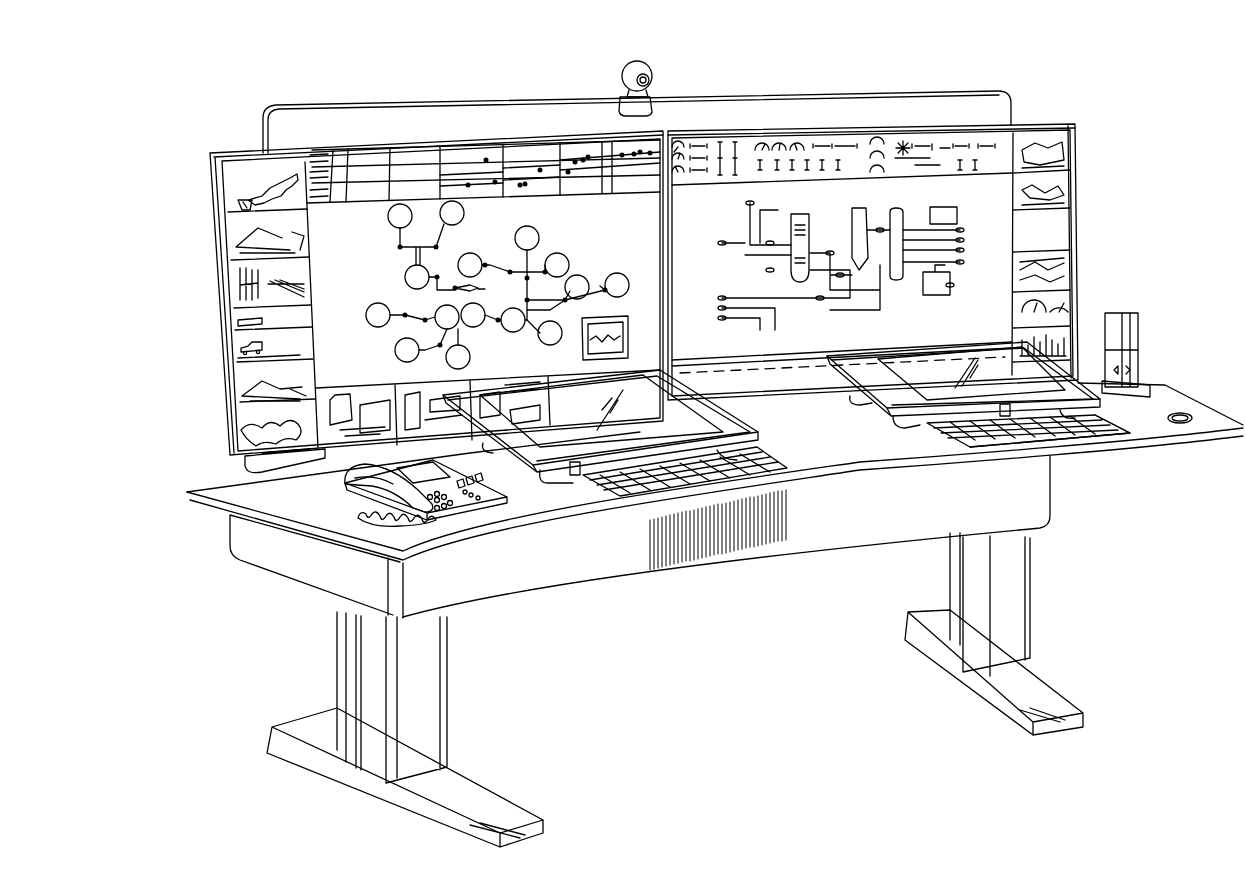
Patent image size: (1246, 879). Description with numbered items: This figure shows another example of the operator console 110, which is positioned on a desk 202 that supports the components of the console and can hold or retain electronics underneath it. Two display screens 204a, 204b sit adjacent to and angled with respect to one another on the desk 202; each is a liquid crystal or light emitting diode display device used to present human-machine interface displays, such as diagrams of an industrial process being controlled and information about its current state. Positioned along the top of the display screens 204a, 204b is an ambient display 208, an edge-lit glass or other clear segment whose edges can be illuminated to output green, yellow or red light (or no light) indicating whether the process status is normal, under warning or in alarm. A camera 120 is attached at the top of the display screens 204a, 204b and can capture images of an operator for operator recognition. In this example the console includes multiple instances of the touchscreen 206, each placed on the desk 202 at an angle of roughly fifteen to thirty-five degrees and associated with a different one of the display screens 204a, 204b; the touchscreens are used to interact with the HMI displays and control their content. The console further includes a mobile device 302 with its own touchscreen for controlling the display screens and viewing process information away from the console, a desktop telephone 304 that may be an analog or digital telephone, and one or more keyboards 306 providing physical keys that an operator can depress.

The operator console 110 is at (206, 86).
The ambient display 208 is at (447, 100).
The camera 120 is at (650, 73).
The display screen 204a is at (215, 303).
The display screen 204b is at (1080, 243).
The desk 202 is at (773, 562).
The touchscreen 206 is at (762, 433).
The mobile device 302 is at (1140, 343).
The desktop telephone 304 is at (463, 510).
The keyboard 306 is at (1120, 423).